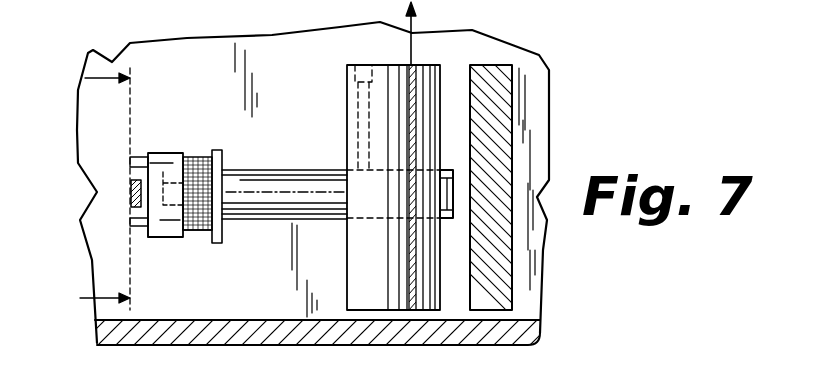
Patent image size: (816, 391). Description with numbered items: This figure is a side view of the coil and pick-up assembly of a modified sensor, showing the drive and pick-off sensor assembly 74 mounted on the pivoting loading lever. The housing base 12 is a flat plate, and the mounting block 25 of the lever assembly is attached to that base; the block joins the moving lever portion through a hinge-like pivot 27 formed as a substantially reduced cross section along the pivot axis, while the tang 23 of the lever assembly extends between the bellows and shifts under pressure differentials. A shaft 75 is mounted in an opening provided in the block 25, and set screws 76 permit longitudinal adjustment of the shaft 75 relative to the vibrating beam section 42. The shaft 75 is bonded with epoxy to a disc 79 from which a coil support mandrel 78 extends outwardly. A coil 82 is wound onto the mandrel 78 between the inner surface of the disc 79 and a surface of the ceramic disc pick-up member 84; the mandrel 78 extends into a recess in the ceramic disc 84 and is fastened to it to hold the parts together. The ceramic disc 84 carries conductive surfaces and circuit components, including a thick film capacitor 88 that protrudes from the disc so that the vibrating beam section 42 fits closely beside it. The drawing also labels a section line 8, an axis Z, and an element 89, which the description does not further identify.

The section line 8- 8 is at (90, 189).
The housing base 12 is at (285, 342).
The tang 23 is at (549, 78).
The mounting block 25 is at (378, 90).
The hinge-like pivot 27 is at (415, 88).
The axis Z is at (413, 45).
The vibrating beam section 42 is at (130, 192).
The drive and pick-off sensor assembly 74 is at (279, 238).
The shaft 75 is at (297, 178).
The set screws 76 is at (362, 63).
The coil support mandrel 78 is at (168, 153).
The disc 79 is at (220, 160).
The coil 82 is at (207, 233).
The ceramic disc pick-up member 84 is at (170, 233).
The thick film capacitor 88 is at (143, 152).
The screws 89 is at (187, 157).